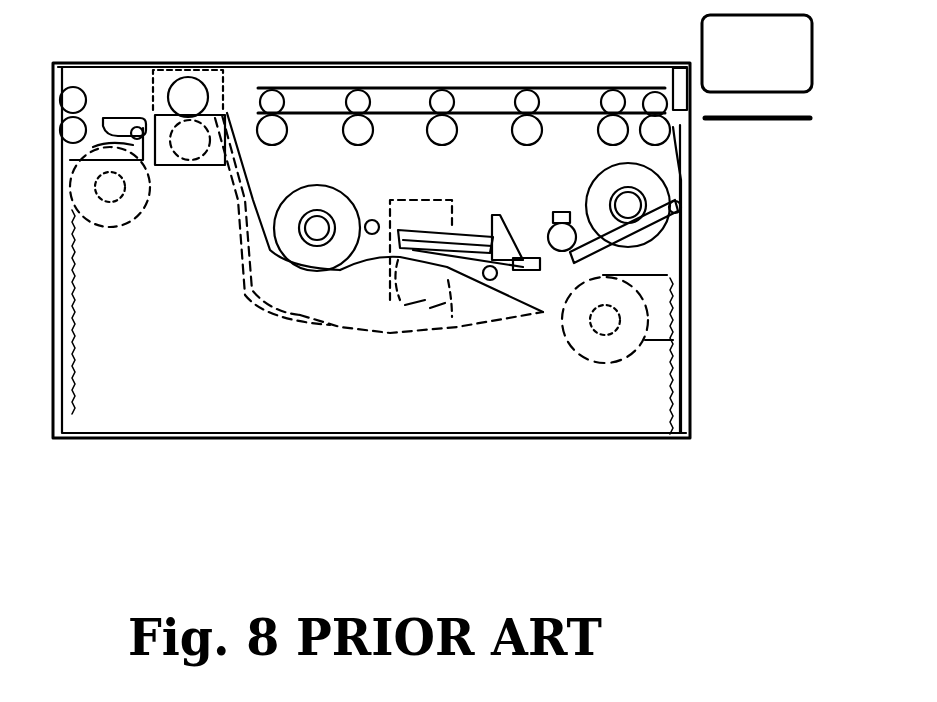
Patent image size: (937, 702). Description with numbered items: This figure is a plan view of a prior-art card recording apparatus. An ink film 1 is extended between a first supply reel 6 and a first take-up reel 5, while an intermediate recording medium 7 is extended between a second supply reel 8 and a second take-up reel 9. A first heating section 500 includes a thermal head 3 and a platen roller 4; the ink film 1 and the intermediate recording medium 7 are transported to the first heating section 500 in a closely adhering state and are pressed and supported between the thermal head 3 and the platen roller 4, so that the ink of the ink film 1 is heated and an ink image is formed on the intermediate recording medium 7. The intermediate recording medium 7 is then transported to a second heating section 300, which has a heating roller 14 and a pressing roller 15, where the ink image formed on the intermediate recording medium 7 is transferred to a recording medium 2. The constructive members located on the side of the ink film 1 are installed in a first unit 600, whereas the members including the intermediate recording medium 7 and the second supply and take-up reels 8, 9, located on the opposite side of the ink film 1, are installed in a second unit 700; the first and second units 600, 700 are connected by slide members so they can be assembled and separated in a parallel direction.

The ink film 1 is at (557, 247).
The recording medium 2 is at (813, 62).
The thermal head 3 is at (440, 230).
The platen roller 4 is at (413, 308).
The first take-up reel 5 is at (340, 203).
The first supply reel 6 is at (690, 245).
The intermediate recording medium 7 is at (543, 312).
The second supply reel 8 is at (673, 345).
The second take-up reel 9 is at (128, 222).
The heating roller 14 is at (197, 165).
The pressing roller 15 is at (213, 67).
The second heating section 300 is at (227, 88).
The first heating section 500 is at (430, 200).
The first unit 600 is at (473, 63).
The second unit 700 is at (422, 440).